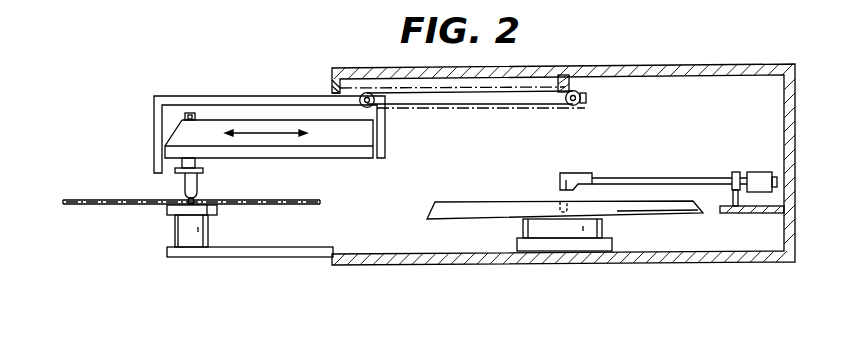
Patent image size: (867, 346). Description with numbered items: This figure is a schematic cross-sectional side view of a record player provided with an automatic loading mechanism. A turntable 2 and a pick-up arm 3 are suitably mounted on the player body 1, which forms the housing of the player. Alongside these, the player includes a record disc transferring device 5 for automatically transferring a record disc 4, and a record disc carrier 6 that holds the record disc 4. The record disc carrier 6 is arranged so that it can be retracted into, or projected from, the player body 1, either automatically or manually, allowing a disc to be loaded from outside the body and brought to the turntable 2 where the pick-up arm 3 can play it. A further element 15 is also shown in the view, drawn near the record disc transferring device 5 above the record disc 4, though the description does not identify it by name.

The player body 1 is at (708, 75).
The turntable 2 is at (490, 202).
The pick-up arm 3 is at (643, 178).
The record disc 4 is at (112, 200).
The record disc transferring device 5 is at (220, 92).
The record disc carrier 6 is at (258, 257).
The spindle 15 is at (207, 178).